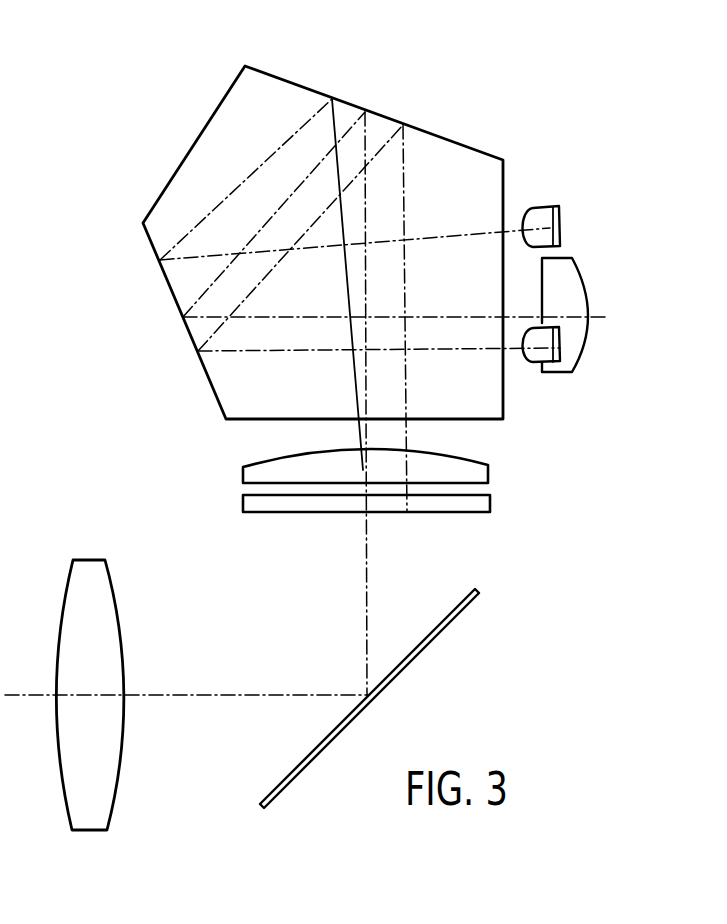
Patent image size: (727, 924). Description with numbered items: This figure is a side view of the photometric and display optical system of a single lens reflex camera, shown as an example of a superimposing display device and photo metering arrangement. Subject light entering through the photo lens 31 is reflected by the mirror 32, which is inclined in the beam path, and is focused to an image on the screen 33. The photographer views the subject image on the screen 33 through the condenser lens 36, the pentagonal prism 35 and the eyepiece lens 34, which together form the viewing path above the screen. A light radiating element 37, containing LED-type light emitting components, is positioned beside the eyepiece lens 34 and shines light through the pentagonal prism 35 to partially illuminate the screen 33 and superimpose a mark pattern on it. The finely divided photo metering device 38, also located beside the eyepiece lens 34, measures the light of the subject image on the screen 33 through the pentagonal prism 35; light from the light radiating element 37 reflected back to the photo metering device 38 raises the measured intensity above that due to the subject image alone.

The photo lens 31 is at (97, 560).
The mirror 32 is at (473, 607).
The screen 33 is at (482, 512).
The eyepiece lens 34 is at (580, 268).
The pentagonal prism 35 is at (293, 82).
The condenser lens 36 is at (488, 468).
The light radiating element 37 is at (533, 362).
The finely divided photo metering device 38 is at (558, 207).